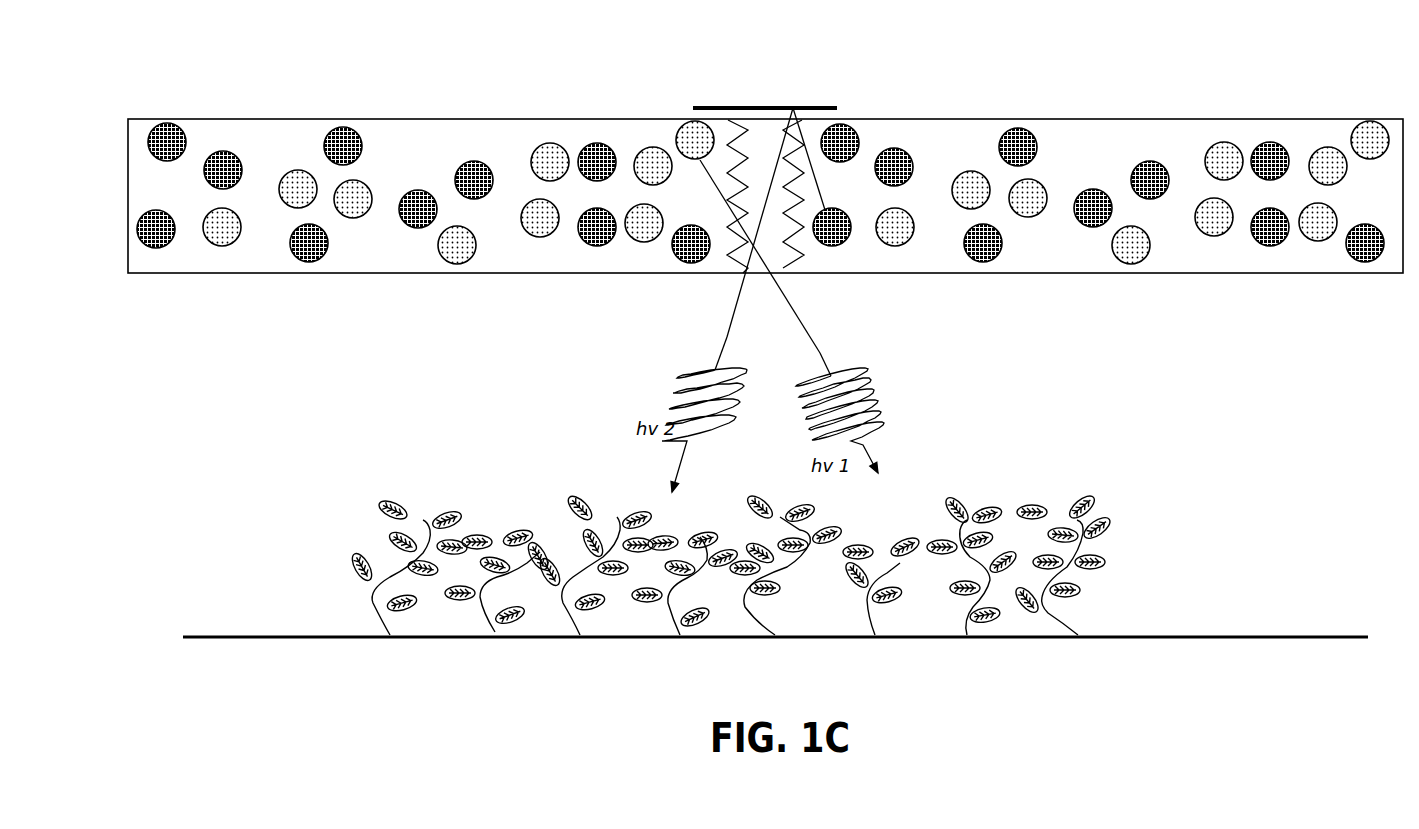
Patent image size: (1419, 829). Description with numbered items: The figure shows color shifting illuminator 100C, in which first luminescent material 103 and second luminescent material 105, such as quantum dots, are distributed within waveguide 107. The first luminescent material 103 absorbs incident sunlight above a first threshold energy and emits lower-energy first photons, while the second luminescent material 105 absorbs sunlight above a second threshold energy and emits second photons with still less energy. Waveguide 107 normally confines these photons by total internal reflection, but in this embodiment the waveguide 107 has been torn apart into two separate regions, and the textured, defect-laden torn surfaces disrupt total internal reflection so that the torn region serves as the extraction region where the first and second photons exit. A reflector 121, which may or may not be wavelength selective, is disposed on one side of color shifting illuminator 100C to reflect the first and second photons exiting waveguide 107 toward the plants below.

The color shifting illuminator 100C is at (171, 101).
The reflector 121 is at (747, 108).
The first luminescent material 103 is at (1318, 232).
The second luminescent material 105 is at (982, 258).
The waveguide 107 is at (1177, 250).